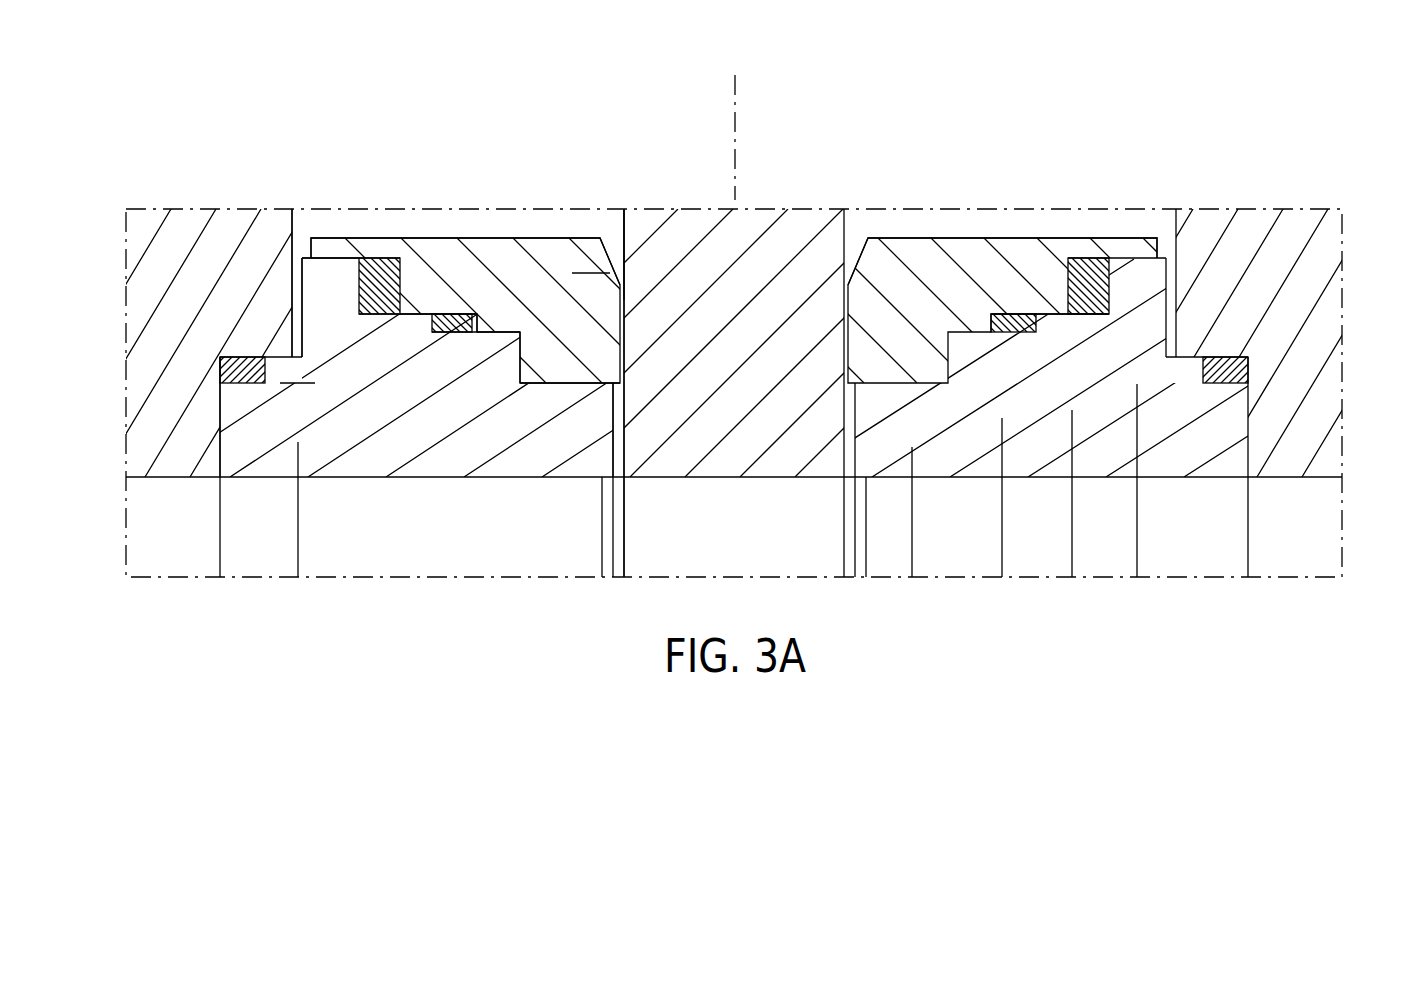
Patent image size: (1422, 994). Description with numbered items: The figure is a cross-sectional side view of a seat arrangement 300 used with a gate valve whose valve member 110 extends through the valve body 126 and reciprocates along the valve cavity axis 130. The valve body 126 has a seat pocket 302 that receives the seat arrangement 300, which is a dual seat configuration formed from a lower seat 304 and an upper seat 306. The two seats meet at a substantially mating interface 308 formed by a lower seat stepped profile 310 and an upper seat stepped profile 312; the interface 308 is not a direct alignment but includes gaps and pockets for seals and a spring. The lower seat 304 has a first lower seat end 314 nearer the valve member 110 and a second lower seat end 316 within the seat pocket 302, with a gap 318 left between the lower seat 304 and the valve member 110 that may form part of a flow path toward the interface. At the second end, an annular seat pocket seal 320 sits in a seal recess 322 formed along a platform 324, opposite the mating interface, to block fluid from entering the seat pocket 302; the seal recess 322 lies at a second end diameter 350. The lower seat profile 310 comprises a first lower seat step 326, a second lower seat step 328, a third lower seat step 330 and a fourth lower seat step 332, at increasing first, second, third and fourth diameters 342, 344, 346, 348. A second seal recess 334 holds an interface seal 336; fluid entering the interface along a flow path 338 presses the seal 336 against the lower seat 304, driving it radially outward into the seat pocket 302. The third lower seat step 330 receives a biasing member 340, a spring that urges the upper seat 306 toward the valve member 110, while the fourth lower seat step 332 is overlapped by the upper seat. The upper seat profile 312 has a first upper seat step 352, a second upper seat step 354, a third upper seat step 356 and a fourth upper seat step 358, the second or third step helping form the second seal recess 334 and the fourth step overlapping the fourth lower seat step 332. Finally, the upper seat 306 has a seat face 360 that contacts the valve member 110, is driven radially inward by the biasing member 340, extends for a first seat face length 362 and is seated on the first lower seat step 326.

The seat arrangement 300 is at (222, 103).
The valve cavity axis 130 is at (748, 112).
The valve member 110 is at (830, 245).
The valve body 126 is at (1290, 326).
The seat pocket 302 is at (203, 365).
The lower seat 304 is at (231, 410).
The upper seat 306 is at (428, 252).
The mating interface 308 is at (634, 380).
The lower seat stepped profile 310 is at (600, 405).
The upper seat stepped profile 312 is at (338, 236).
The first lower seat end 314 is at (597, 488).
The second lower seat end 316 is at (233, 488).
The gap 318 is at (629, 488).
The seat pocket seal 320 is at (236, 354).
The seal recess 322 is at (241, 335).
The platform 324 is at (218, 392).
The first lower seat step 326 is at (538, 399).
The second lower seat step 328 is at (488, 353).
The third lower seat step 330 is at (390, 338).
The fourth lower seat step 332 is at (340, 280).
The second seal recess 334 is at (447, 338).
The interface seal 336 is at (466, 314).
The flow path 338 is at (552, 385).
The biasing member 340 is at (381, 257).
The first diameter 342 is at (973, 415).
The second diameter 344 is at (1003, 334).
The third diameter 346 is at (1073, 319).
The fourth diameter 348 is at (1102, 387).
The second end diameter 350 is at (298, 384).
The first upper seat step 352 is at (908, 361).
The second upper seat step 354 is at (974, 307).
The third upper seat step 356 is at (1021, 302).
The fourth upper seat step 358 is at (1128, 236).
The seat face 360 is at (624, 287).
The first seat face length 362 is at (580, 274).